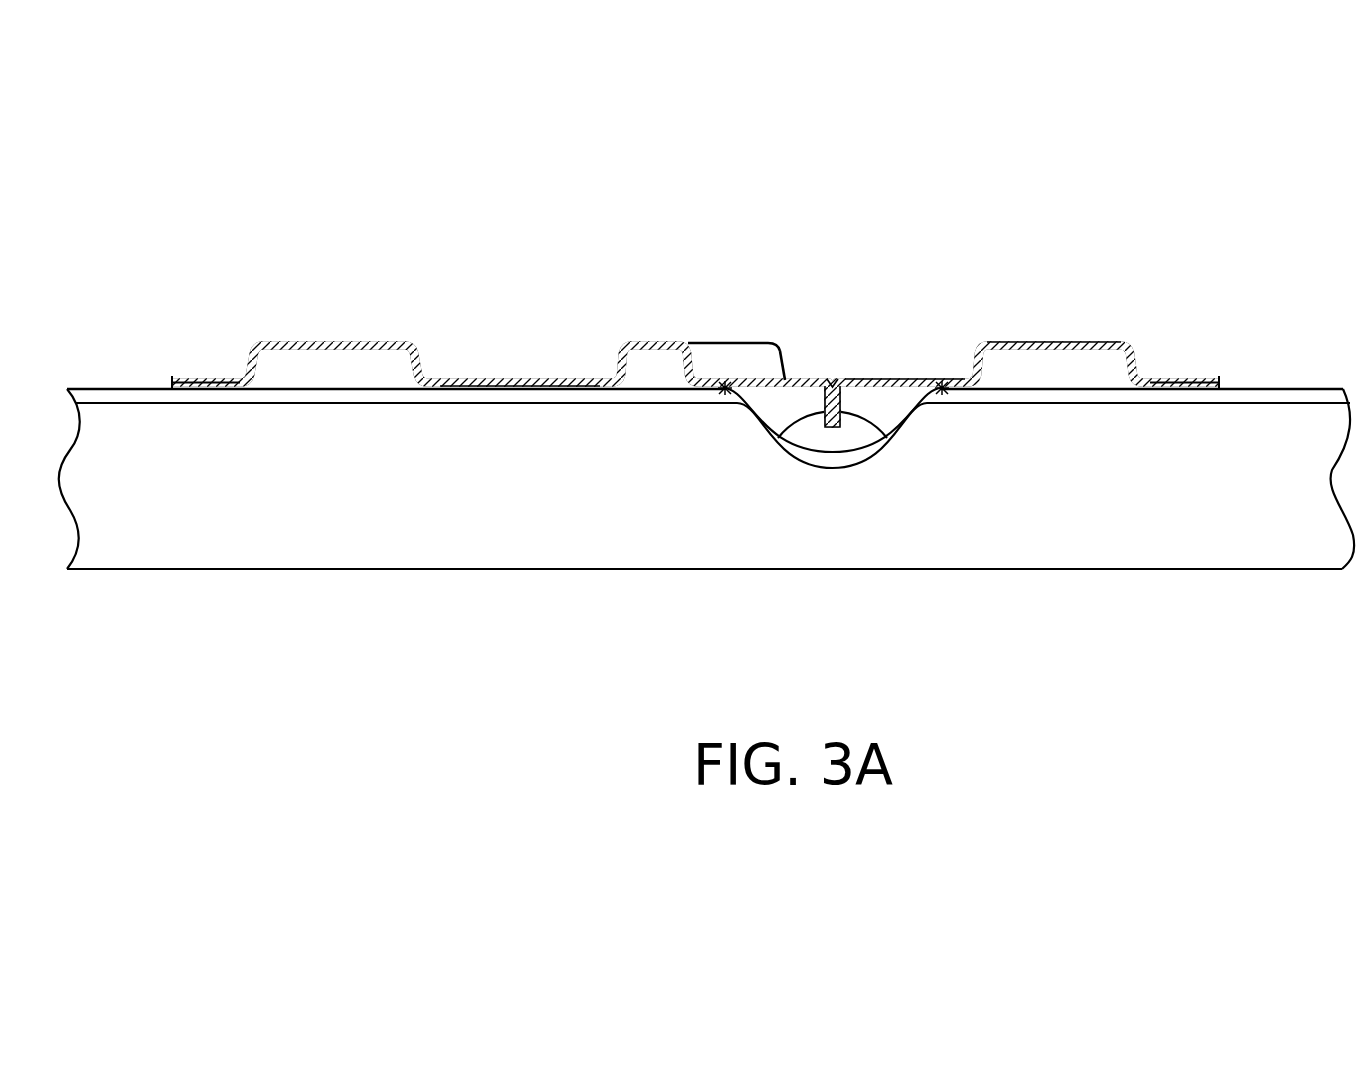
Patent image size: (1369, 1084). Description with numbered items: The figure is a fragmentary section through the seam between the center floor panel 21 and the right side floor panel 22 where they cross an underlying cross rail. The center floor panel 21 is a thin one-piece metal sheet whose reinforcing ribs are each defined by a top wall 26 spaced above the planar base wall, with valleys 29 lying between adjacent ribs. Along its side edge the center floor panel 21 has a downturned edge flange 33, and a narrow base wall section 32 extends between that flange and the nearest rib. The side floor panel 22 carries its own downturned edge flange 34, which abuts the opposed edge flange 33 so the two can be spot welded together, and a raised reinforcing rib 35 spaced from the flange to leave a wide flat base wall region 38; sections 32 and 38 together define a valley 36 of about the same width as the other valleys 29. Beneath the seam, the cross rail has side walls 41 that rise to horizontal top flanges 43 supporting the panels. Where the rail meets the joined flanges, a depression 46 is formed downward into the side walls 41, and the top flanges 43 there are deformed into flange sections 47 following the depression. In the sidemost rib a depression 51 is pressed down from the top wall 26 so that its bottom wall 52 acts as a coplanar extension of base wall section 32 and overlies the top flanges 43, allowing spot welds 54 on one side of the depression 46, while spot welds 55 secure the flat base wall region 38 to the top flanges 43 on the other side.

The center floor panel 21 is at (257, 343).
The right side floor panel 22 is at (1183, 378).
The top wall 26 is at (330, 340).
The valleys 29 is at (528, 363).
The base wall section 32 is at (802, 378).
The edge flange 33 is at (795, 428).
The edge flange 34 is at (872, 428).
The raised reinforcing rib 35 is at (1068, 343).
The valley 36 is at (873, 372).
The flat base wall region 38 is at (915, 378).
The side walls 41 is at (1113, 533).
The top flanges 43 is at (1292, 397).
The depression 46 is at (843, 435).
The deformed flange sections 47 is at (815, 458).
The depression 51 is at (717, 360).
The bottom wall 52 is at (755, 378).
The spot welds 54 is at (725, 388).
The spot welds 55 is at (942, 388).